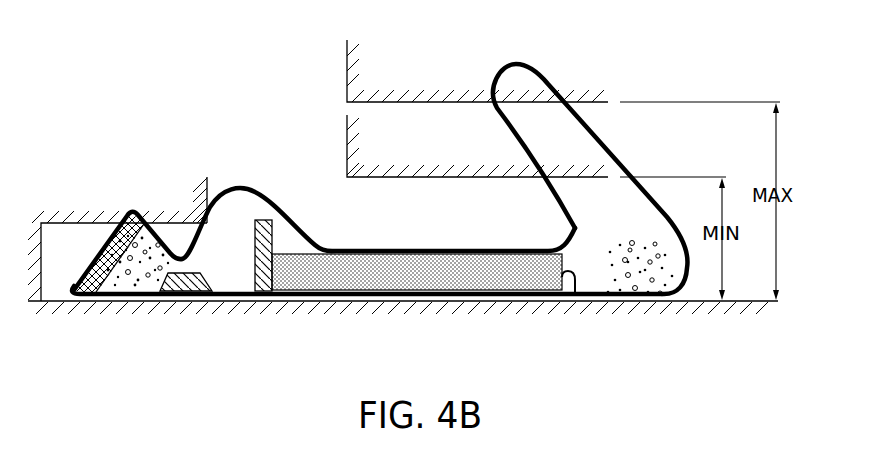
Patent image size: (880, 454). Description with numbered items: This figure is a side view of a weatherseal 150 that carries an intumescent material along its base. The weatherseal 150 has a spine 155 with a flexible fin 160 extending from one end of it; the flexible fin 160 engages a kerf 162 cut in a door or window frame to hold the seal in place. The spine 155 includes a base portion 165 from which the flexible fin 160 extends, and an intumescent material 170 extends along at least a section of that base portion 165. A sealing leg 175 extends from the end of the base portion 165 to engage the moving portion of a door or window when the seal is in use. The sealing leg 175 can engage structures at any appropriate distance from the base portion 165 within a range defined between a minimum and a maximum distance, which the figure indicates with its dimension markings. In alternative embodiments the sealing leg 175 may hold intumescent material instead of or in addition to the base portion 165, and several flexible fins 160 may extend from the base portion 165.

The weatherseal 150 is at (156, 49).
The spine 155 is at (207, 299).
The flexible fin 160 is at (107, 236).
The kerf 162 is at (36, 302).
The base portion 165 is at (490, 300).
The intumescent material 170 is at (362, 275).
The sealing leg 175 is at (535, 55).